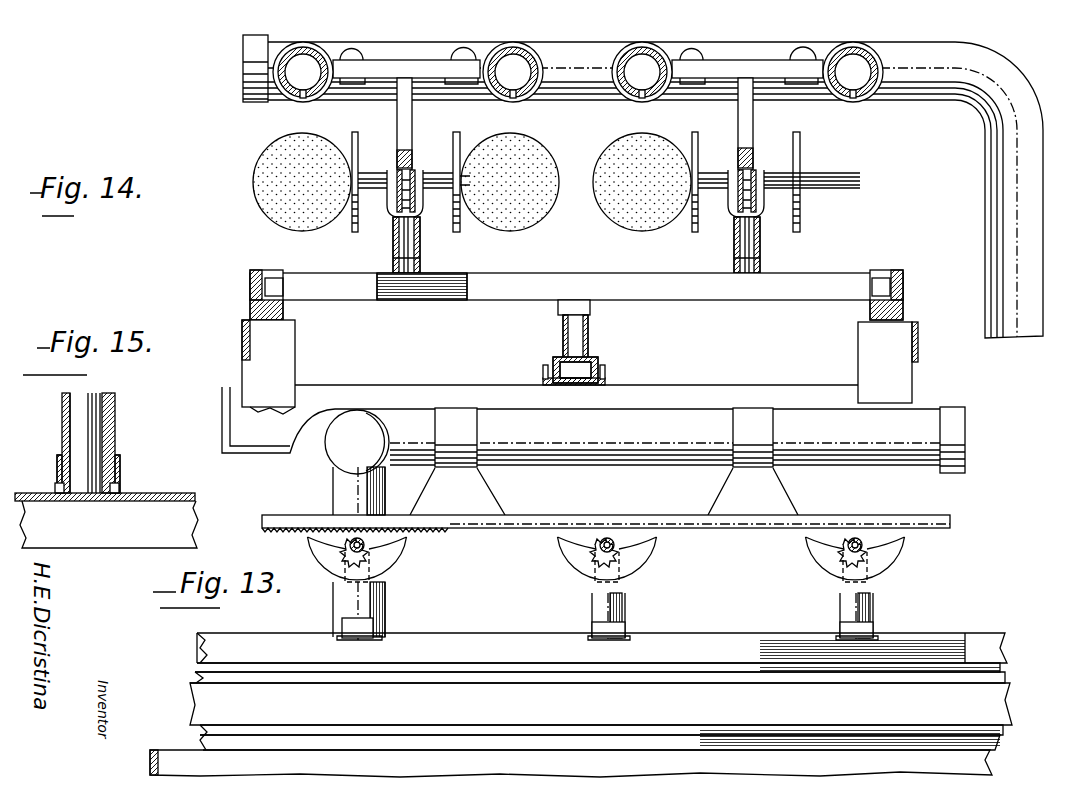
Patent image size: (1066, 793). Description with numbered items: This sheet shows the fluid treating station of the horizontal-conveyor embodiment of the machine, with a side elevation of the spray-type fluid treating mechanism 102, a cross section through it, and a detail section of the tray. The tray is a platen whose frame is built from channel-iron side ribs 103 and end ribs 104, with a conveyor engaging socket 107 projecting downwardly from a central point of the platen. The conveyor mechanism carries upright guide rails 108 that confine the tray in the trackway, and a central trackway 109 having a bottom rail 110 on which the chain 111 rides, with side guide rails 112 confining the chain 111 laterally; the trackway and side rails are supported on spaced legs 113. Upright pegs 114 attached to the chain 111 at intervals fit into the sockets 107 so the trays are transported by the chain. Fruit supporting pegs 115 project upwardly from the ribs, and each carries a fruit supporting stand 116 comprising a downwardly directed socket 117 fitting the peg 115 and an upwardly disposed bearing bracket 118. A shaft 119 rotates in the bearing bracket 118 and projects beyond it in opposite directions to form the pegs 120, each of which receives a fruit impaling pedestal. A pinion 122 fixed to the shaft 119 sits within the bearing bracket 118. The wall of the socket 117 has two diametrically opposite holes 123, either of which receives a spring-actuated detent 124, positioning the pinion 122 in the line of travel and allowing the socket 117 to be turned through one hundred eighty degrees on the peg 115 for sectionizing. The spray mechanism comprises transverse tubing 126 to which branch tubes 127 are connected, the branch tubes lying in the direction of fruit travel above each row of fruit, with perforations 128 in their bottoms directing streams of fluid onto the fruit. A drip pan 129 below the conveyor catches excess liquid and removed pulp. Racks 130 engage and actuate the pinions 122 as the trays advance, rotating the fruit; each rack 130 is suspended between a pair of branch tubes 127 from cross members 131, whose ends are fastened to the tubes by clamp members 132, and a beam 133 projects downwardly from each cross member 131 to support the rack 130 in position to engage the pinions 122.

In FIG. 14, the fluid treating mechanism 102 is at (550, 33).
In FIG. 13, the fluid treating mechanism 102 is at (870, 453).
In FIG. 14, the side ribs 103 is at (270, 273).
In FIG. 13, the side ribs 103 is at (477, 642).
In FIG. 14, the end ribs 104 is at (618, 262).
In FIG. 14, the conveyor engaging socket 107 is at (590, 341).
In FIG. 14, the upright guide rails 108 is at (250, 288).
In FIG. 13, the upright guide rails 108 is at (270, 633).
In FIG. 14, the central trackway 109 is at (600, 377).
In FIG. 14, the bottom rail 110 is at (580, 385).
In FIG. 14, the chain 111 is at (599, 362).
In FIG. 14, the side guide rails 112 is at (546, 375).
In FIG. 14, the legs 113 is at (285, 357).
In FIG. 14, the upright pegs 114 is at (575, 332).
In FIG. 14, the fruit supporting pegs 115 is at (419, 244).
In FIG. 15, the fruit supporting pegs 115 is at (102, 438).
In FIG. 14, the fruit supporting stand 116 is at (393, 234).
In FIG. 13, the fruit supporting stand 116 is at (626, 608).
In FIG. 15, the fruit supporting stand 116 is at (125, 454).
In FIG. 14, the socket 117 is at (422, 264).
In FIG. 15, the socket 117 is at (121, 471).
In FIG. 14, the bearing bracket 118 is at (393, 173).
In FIG. 14, the shaft 119 is at (433, 193).
In FIG. 13, the shaft 119 is at (362, 541).
In FIG. 14, the pegs 120 is at (463, 155).
In FIG. 13, the pegs 120 is at (606, 558).
In FIG. 14, the pinion 122 is at (418, 152).
In FIG. 13, the pinion 122 is at (598, 538).
In FIG. 15, the holes 123 is at (58, 493).
In FIG. 15, the detent 124 is at (104, 501).
In FIG. 14, the transverse tubing 126 is at (424, 31).
In FIG. 13, the transverse tubing 126 is at (333, 445).
In FIG. 14, the branch tubes 127 is at (296, 60).
In FIG. 13, the branch tubes 127 is at (808, 452).
In FIG. 14, the perforations 128 is at (645, 97).
In FIG. 13, the perforations 128 is at (663, 468).
In FIG. 14, the drip pan 129 is at (400, 390).
In FIG. 13, the drip pan 129 is at (163, 752).
In FIG. 14, the rack 130 is at (403, 151).
In FIG. 13, the rack 130 is at (437, 526).
In FIG. 14, the cross members 131 is at (402, 67).
In FIG. 14, the clamp members 132 is at (490, 43).
In FIG. 14, the beam 133 is at (397, 110).